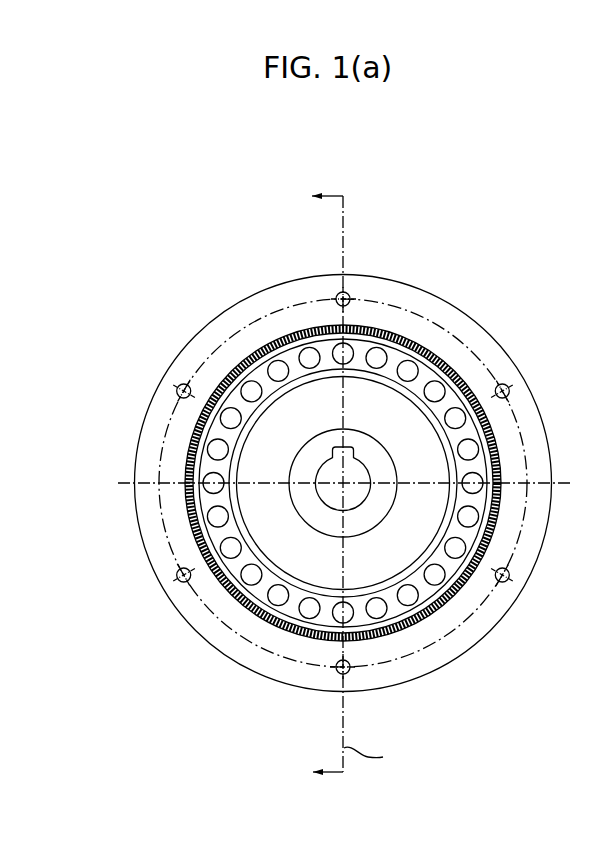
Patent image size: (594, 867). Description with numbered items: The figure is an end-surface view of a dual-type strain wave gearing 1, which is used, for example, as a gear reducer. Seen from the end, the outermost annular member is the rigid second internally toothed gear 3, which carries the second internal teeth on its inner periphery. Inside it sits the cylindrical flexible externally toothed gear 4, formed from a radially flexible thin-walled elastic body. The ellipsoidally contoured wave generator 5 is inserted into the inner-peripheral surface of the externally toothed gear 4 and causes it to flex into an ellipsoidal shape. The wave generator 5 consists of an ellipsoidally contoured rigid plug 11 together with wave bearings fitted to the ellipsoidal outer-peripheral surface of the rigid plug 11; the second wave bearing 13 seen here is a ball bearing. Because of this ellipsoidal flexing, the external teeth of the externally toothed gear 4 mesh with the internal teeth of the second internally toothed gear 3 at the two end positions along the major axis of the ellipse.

The strain wave gearing 1 is at (445, 245).
The second internally toothed gear 3 is at (212, 332).
The flexible externally toothed gear 4 is at (223, 375).
The wave generator 5 is at (205, 423).
The second wave bearing 13 is at (198, 438).
The rigid plug 11 is at (237, 507).